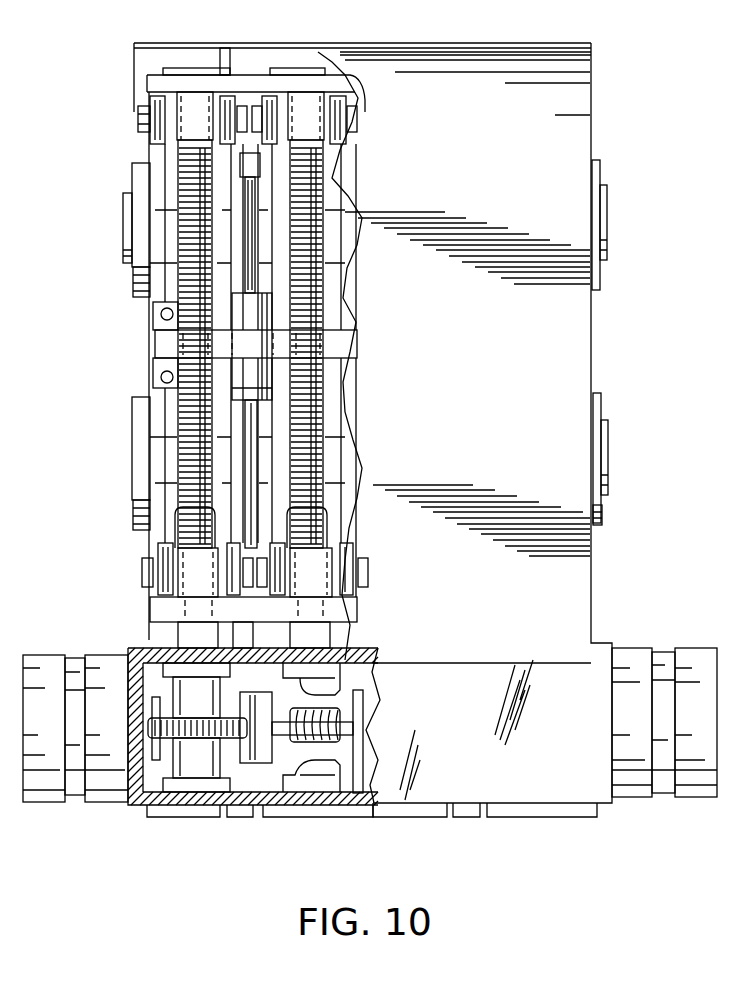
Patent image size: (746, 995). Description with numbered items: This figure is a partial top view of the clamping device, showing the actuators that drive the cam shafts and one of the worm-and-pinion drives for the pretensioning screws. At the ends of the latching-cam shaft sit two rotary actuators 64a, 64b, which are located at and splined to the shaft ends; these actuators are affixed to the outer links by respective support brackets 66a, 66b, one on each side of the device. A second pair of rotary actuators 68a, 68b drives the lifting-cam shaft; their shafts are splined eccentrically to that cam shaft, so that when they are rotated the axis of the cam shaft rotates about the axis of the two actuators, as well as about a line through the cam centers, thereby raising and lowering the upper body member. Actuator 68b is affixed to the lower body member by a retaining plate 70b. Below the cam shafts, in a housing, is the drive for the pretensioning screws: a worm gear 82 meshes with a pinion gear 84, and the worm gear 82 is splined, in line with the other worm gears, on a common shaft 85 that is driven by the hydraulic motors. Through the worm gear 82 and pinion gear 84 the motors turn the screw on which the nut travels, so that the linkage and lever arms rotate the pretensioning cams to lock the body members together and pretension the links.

The support bracket 66a is at (140, 172).
The rotary actuator 64a is at (128, 222).
The rotary actuator 68a is at (140, 418).
The support bracket 66b is at (597, 162).
The rotary actuator 64b is at (606, 217).
The rotary actuator 68b is at (604, 448).
The retaining plate 70b is at (598, 522).
The pinion gear 84 is at (170, 742).
The worm gear 82 is at (295, 742).
The common shaft 85 is at (358, 818).